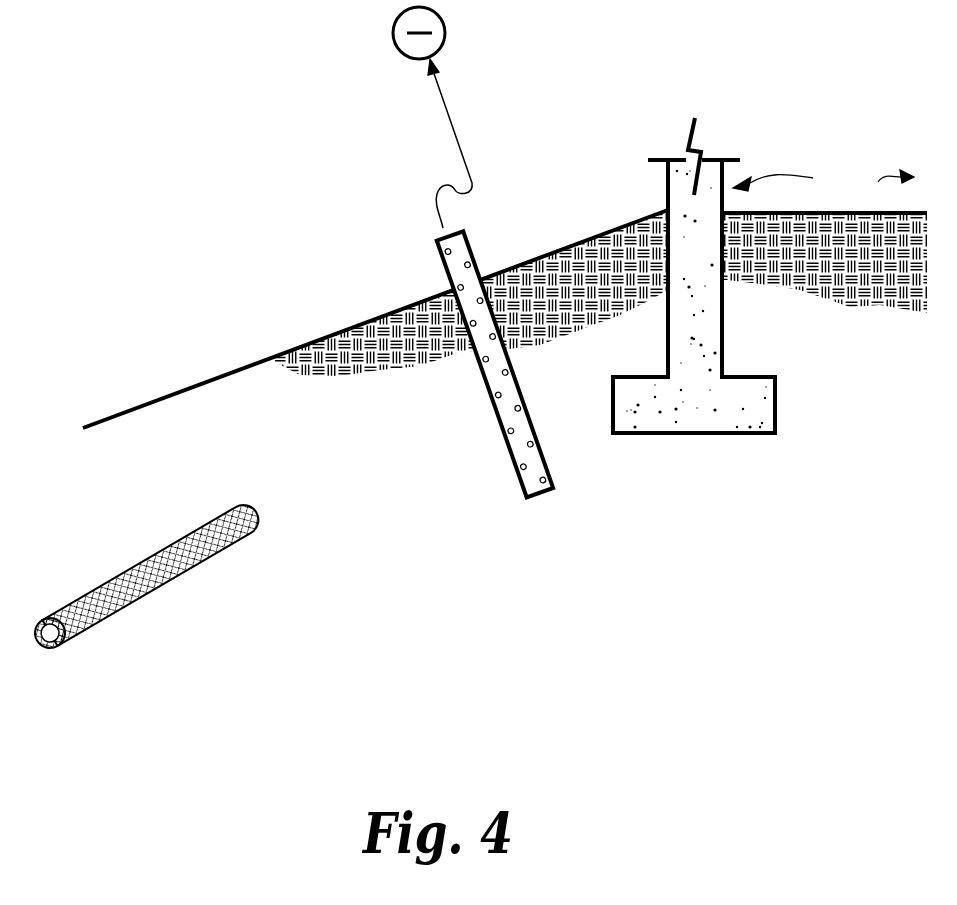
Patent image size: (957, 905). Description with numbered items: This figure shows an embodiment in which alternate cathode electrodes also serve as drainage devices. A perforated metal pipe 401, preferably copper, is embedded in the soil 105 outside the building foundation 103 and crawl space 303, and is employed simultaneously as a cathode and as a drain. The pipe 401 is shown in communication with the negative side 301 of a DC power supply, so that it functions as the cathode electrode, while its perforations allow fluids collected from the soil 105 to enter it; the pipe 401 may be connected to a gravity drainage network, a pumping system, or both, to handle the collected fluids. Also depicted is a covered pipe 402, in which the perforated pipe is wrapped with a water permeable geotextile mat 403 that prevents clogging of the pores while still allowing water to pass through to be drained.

The building foundation 103 is at (728, 155).
The soil 105 is at (330, 336).
The negative side of DC power supply 301 is at (395, 53).
The crawl space 303 is at (823, 180).
The perforated metal pipe 401 is at (437, 253).
The covered pipe 402 is at (193, 604).
The water permeable geotextile mat 403 is at (212, 557).